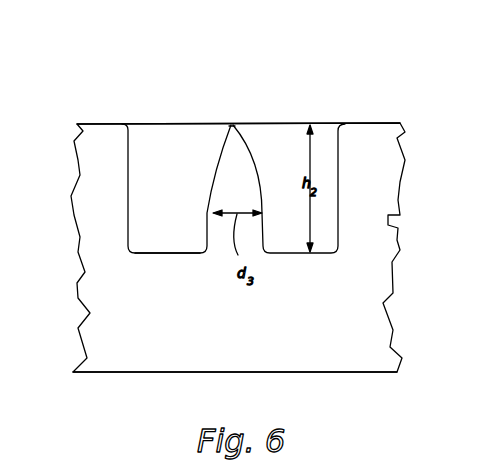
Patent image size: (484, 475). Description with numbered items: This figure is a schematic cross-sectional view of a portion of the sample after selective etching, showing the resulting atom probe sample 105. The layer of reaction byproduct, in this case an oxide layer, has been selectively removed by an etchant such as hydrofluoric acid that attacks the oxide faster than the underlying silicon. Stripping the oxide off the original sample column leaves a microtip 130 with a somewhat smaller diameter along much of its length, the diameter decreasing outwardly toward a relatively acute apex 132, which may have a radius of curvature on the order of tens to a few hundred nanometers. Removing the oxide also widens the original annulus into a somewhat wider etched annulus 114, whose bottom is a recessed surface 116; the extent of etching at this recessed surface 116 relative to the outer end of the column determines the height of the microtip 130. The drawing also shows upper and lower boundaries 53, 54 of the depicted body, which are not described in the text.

The top surface of substrate 53 is at (102, 124).
The bottom surface of substrate 54 is at (117, 372).
The atom probe sample 105 is at (345, 96).
The etched annulus 114 is at (162, 160).
The recessed surface 116 is at (178, 253).
The microtip 130 is at (237, 185).
The apex 132 is at (230, 125).